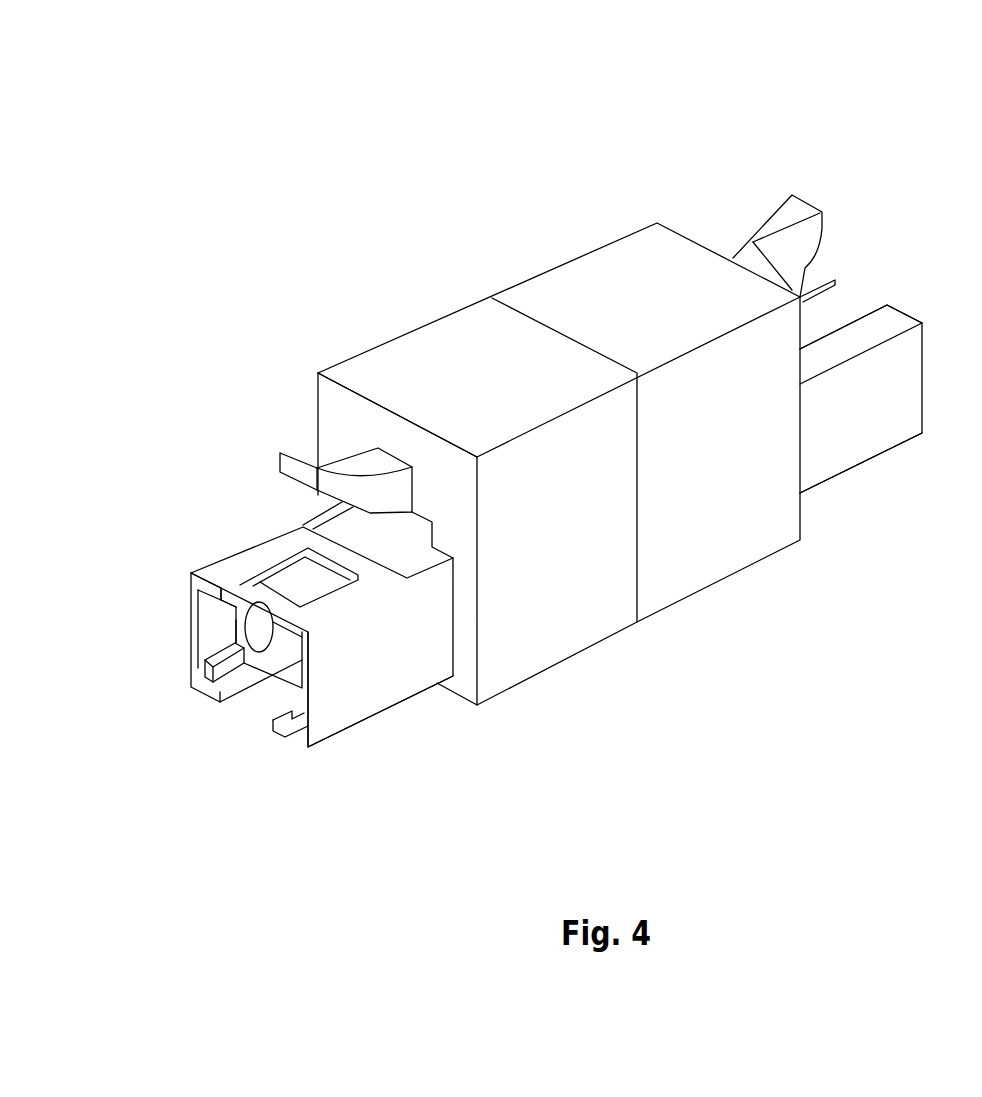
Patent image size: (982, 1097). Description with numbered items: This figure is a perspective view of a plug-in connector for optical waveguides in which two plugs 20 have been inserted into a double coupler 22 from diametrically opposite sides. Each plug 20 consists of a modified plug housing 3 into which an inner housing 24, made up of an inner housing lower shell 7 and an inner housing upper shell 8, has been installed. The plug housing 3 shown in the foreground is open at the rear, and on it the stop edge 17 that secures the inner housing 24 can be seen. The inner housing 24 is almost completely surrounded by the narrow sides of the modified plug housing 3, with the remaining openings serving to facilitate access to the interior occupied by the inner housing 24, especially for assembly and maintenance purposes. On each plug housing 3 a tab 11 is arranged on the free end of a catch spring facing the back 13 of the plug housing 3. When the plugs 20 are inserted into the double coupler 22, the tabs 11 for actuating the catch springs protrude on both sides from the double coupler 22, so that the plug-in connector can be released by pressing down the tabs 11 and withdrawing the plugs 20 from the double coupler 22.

The double coupler 22 is at (570, 287).
The tab 11 is at (790, 216).
The inner housing 24 is at (820, 325).
The RJ-45 plug housing 3 is at (883, 420).
The plug 20 is at (845, 485).
The inner housing lower shell 7 is at (235, 606).
The inner housing upper shell 8 is at (240, 634).
The stop edge 17 is at (205, 666).
The back 13 is at (297, 735).